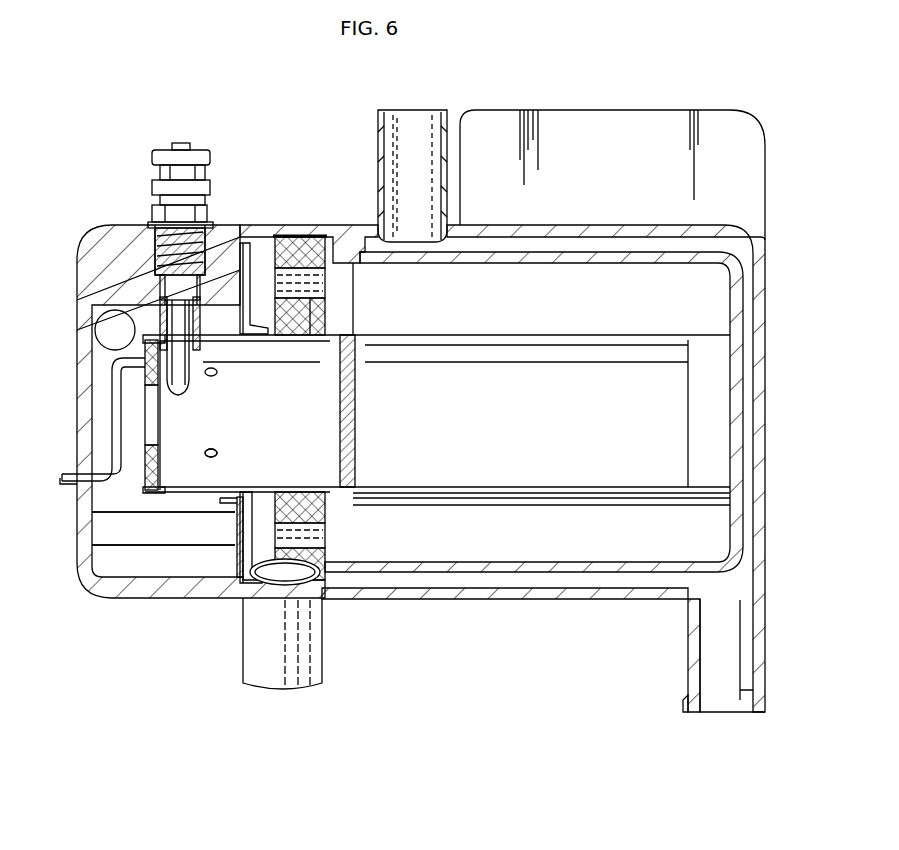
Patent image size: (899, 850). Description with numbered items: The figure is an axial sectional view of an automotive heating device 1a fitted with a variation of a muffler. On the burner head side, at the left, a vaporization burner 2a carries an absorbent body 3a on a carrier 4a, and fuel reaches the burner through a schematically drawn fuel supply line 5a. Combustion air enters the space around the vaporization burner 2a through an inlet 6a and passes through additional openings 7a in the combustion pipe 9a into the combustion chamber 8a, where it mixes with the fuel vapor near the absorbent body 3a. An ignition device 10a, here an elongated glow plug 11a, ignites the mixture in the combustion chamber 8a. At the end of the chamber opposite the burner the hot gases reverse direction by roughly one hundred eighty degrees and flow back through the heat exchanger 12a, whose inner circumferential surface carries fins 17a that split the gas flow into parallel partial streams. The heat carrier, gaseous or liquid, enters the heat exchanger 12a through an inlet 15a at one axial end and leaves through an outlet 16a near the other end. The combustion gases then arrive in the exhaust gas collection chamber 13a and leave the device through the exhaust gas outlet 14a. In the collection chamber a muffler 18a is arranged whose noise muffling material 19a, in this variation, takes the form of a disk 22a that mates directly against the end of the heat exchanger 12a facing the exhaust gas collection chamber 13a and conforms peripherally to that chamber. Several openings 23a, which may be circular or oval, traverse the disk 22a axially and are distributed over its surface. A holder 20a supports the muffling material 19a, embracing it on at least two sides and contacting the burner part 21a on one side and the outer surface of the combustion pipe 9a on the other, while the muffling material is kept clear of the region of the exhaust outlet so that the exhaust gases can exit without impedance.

The heating device 1a is at (112, 120).
The vaporization burner 2a is at (180, 442).
The absorbent body 3a is at (147, 462).
The carrier 4a is at (144, 472).
The fuel supply line 5a is at (72, 493).
The inlet 6a is at (103, 330).
The openings 7a is at (211, 458).
The combustion chamber 8a is at (306, 420).
The combustion pipe 9a is at (322, 300).
The ignition device 10a is at (141, 203).
The glow plug 11a is at (205, 262).
The heat exchanger 12a is at (495, 602).
The exhaust gas collection chamber 13a is at (258, 255).
The exhaust gas outlet 14a is at (270, 665).
The inlet 15a is at (693, 672).
The outlet 16a is at (383, 160).
The fins 17a is at (553, 530).
The muffler 18a is at (334, 550).
The noise muffling material 19a is at (290, 250).
The holder 20a is at (240, 500).
The burner part 21a is at (95, 262).
The disk 22a is at (313, 224).
The openings 23a is at (320, 530).